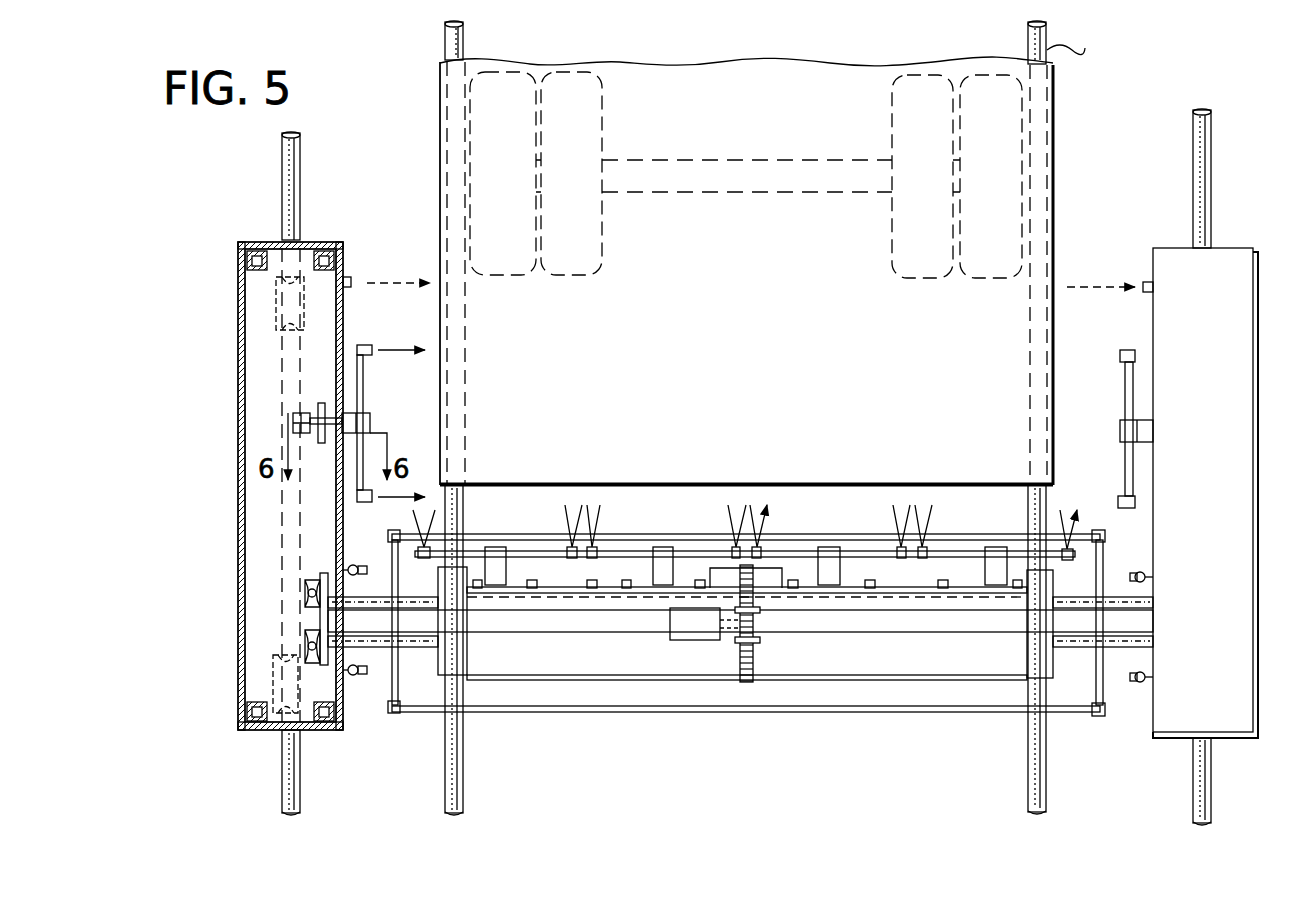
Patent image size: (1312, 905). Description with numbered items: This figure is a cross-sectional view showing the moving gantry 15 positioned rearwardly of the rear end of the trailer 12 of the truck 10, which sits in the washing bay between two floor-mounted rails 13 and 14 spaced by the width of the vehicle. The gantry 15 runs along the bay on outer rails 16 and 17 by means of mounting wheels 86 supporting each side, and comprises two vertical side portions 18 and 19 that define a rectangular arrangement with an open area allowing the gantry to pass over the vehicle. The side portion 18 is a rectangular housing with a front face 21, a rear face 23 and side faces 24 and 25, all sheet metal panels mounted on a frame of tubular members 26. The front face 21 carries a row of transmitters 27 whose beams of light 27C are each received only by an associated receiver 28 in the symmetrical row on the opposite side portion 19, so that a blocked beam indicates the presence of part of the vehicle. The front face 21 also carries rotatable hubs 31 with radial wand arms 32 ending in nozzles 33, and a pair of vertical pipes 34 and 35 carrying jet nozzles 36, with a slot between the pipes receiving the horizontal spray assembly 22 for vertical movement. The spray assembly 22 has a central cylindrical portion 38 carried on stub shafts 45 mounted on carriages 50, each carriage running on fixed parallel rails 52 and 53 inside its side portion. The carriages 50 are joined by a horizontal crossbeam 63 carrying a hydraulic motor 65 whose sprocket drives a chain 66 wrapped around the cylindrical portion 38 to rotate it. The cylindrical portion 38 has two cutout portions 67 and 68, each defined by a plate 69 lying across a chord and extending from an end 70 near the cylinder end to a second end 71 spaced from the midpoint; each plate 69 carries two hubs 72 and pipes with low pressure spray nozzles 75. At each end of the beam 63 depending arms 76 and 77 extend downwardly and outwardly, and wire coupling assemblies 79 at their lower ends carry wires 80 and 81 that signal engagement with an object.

The truck 10 is at (750, 58).
The trailer 12 is at (758, 342).
The rail 13 is at (1048, 36).
The rail 14 is at (440, 37).
The moving gantry 15 is at (220, 742).
The rail 16 is at (1215, 160).
The rail 17 is at (280, 155).
The vertical side portion 18 is at (236, 447).
The vertical side portion 19 is at (1236, 246).
The front face 21 is at (345, 318).
The spray assembly 22 is at (625, 520).
The rear face 23 is at (240, 385).
The side face 24 is at (276, 242).
The side face 25 is at (310, 733).
The tubular members 26 is at (250, 265).
The transmitters 27 is at (350, 278).
The beam of light 27C is at (378, 280).
The receivers 28 is at (1145, 293).
The hub 31 is at (372, 425).
The wand arms 32 is at (364, 392).
The nozzle 33 is at (368, 345).
The vertical pipe 34 is at (1148, 672).
The vertical pipe 35 is at (1142, 572).
The jet nozzles 36 is at (1135, 585).
The central cylindrical portion 38 is at (862, 682).
The stub shaft 45 is at (1140, 612).
The carriage 50 is at (318, 618).
The rail 52 is at (315, 578).
The rail 53 is at (305, 648).
The horizontal crossbeam 63 is at (487, 622).
The hydraulic motor 65 is at (690, 645).
The chain 66 is at (755, 660).
The cutout portion 67 is at (592, 590).
The cutout portion 68 is at (872, 590).
The plate 69 is at (532, 590).
The end 70 is at (483, 560).
The second end 71 is at (700, 545).
The hubs 72 is at (543, 548).
The low pressure spray nozzles 75 is at (795, 590).
The depending arm 76 is at (1110, 560).
The depending arm 77 is at (1106, 710).
The wire coupling assembly 79 is at (1098, 530).
The wire 80 is at (830, 538).
The wire 81 is at (705, 714).
The mounting wheels 86 is at (272, 306).